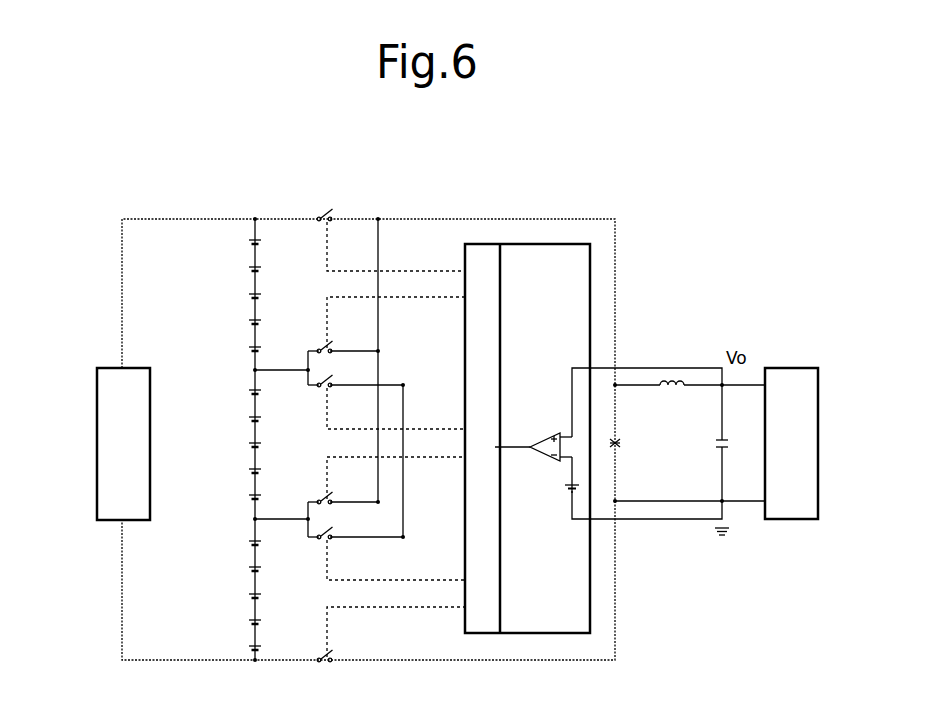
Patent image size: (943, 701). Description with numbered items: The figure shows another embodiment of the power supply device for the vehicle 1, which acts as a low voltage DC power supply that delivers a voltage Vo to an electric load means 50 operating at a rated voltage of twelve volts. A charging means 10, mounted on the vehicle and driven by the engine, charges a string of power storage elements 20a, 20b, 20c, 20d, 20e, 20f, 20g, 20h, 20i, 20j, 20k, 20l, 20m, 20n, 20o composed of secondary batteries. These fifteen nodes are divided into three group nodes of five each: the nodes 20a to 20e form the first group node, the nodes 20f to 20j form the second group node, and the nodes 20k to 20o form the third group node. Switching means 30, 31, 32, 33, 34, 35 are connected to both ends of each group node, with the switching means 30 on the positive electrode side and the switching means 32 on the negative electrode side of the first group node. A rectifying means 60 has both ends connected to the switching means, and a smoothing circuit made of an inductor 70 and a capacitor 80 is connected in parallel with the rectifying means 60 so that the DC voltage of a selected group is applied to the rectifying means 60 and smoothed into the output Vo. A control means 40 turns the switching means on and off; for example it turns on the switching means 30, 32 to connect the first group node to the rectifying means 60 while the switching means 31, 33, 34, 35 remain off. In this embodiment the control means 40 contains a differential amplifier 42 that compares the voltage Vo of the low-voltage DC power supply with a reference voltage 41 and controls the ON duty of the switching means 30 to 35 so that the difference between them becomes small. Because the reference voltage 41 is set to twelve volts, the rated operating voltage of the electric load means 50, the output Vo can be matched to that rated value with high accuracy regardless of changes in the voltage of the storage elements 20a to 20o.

The power supply device for the vehicle 1 is at (796, 212).
The charging means 10 is at (116, 458).
The power storage element 20a is at (219, 240).
The power storage element 20b is at (219, 267).
The power storage element 20c is at (219, 294).
The power storage element 20d is at (219, 320).
The power storage element 20e is at (219, 347).
The power storage element 20f is at (219, 390).
The power storage element 20g is at (219, 417).
The power storage element 20h is at (219, 443).
The power storage element 20i is at (219, 469).
The power storage element 20j is at (219, 495).
The power storage element 20k is at (219, 541).
The power storage element 20l is at (219, 567).
The power storage element 20m is at (219, 594).
The power storage element 20n is at (219, 620).
The power storage element 20o is at (219, 646).
The switching means 30 is at (333, 208).
The switching means 31 is at (328, 340).
The switching means 32 is at (329, 394).
The switching means 33 is at (329, 492).
The switching means 34 is at (329, 545).
The switching means 35 is at (327, 649).
The control means 40 is at (533, 265).
The reference voltage 41 is at (580, 488).
The differential amplifier 42 is at (548, 437).
The electric load means 50 is at (803, 385).
The rectifying means 60 is at (634, 460).
The inductor 70 is at (676, 378).
The capacitor 80 is at (738, 460).